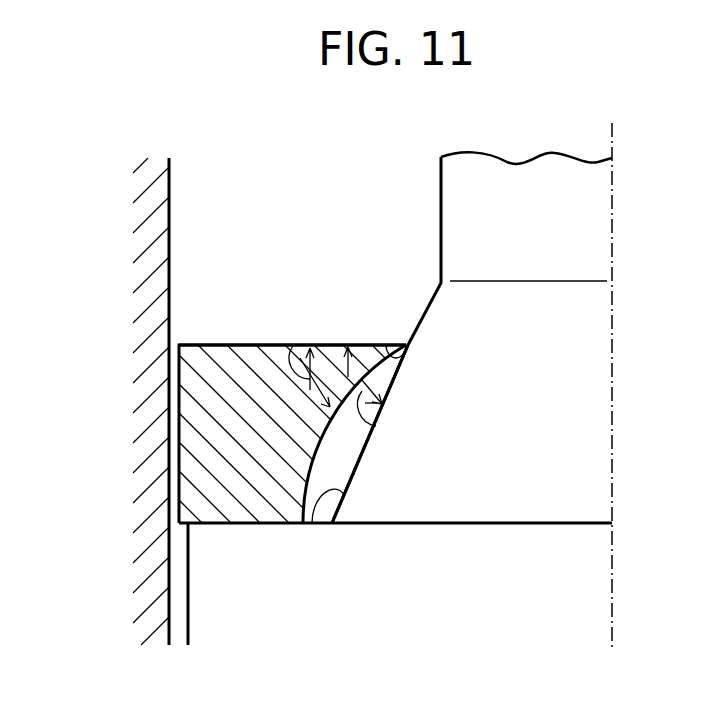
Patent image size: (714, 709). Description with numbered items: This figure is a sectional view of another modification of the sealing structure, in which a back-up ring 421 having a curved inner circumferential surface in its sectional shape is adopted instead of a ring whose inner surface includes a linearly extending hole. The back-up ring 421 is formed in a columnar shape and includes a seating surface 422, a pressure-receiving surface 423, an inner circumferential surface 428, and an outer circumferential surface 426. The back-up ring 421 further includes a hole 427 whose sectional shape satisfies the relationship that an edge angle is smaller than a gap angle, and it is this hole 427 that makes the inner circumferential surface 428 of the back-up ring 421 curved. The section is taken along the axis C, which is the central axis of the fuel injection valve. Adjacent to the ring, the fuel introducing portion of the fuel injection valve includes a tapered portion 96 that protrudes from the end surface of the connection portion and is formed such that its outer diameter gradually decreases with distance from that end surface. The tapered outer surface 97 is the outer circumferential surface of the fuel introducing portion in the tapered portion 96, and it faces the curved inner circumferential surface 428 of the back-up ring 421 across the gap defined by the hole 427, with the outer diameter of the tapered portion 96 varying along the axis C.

The back-up ring 421 is at (292, 284).
The seating surface 422 is at (245, 523).
The pressure-receiving surface 423 is at (247, 345).
The outer circumferential surface 426 is at (178, 378).
The hole 427 is at (406, 345).
The inner circumferential surface 428 is at (312, 445).
The tapered portion 96 is at (598, 420).
The tapered outer surface 97 is at (313, 523).
The axis C is at (614, 131).